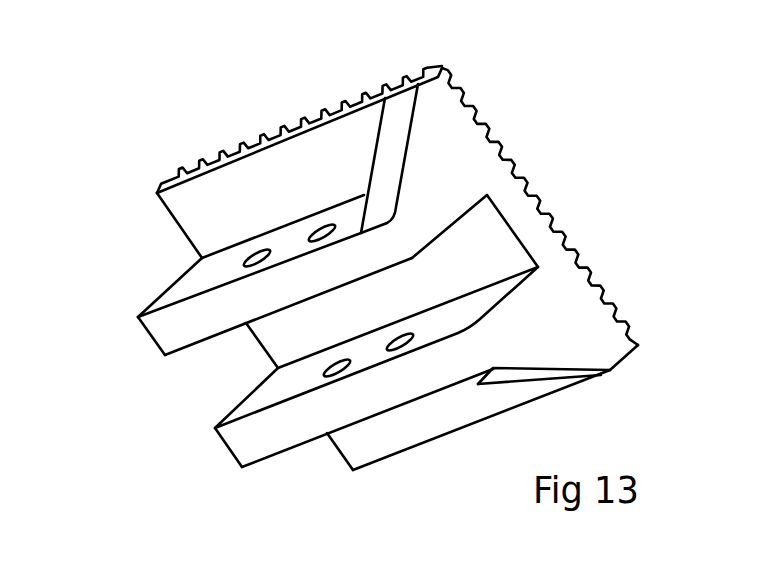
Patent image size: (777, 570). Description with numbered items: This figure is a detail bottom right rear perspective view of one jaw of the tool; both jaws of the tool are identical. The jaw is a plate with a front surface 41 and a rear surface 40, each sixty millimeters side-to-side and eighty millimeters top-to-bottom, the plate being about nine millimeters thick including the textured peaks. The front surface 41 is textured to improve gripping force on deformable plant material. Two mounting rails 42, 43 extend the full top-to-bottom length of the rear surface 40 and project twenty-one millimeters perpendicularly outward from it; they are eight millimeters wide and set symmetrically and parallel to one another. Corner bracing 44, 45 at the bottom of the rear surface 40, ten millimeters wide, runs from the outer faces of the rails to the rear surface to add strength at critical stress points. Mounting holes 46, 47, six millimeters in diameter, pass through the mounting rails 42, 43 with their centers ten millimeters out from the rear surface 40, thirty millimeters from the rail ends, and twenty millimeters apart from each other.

The rear surface 40 is at (330, 110).
The front surface 41 is at (470, 82).
The mounting rail 42 is at (140, 344).
The mounting rail 43 is at (215, 455).
The corner bracing 44 is at (416, 148).
The corner bracing 45 is at (570, 360).
The mounting hole 46 is at (238, 252).
The mounting hole 47 is at (322, 214).